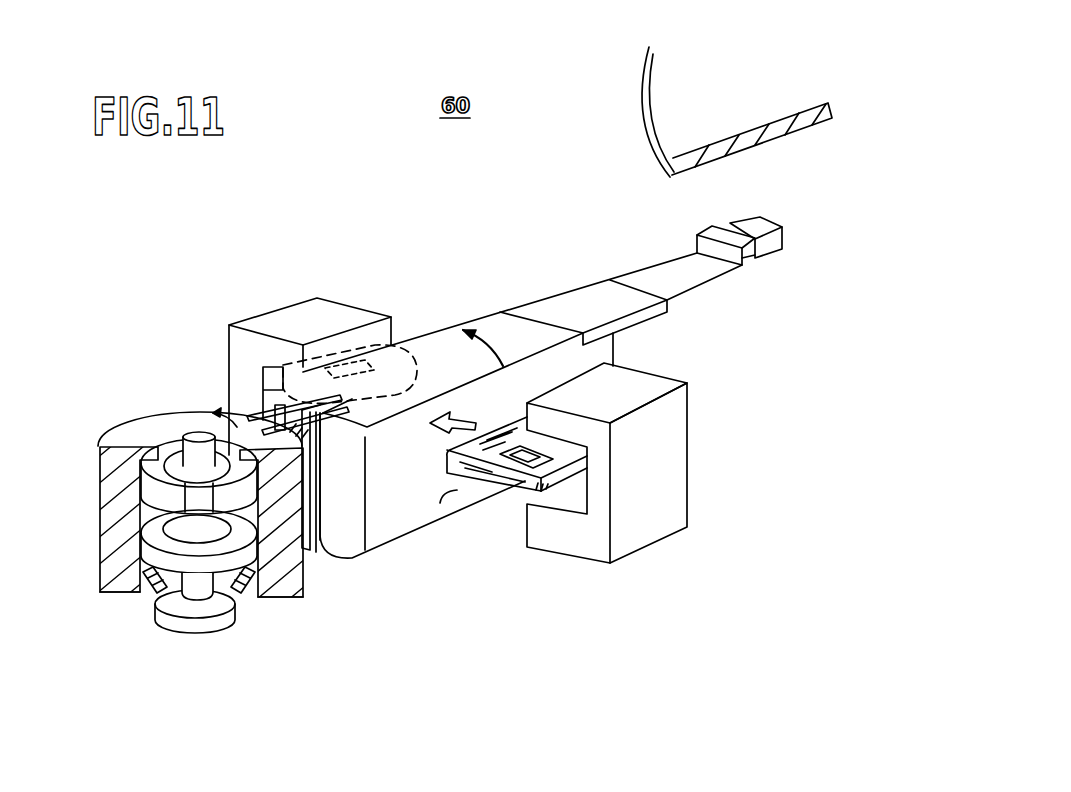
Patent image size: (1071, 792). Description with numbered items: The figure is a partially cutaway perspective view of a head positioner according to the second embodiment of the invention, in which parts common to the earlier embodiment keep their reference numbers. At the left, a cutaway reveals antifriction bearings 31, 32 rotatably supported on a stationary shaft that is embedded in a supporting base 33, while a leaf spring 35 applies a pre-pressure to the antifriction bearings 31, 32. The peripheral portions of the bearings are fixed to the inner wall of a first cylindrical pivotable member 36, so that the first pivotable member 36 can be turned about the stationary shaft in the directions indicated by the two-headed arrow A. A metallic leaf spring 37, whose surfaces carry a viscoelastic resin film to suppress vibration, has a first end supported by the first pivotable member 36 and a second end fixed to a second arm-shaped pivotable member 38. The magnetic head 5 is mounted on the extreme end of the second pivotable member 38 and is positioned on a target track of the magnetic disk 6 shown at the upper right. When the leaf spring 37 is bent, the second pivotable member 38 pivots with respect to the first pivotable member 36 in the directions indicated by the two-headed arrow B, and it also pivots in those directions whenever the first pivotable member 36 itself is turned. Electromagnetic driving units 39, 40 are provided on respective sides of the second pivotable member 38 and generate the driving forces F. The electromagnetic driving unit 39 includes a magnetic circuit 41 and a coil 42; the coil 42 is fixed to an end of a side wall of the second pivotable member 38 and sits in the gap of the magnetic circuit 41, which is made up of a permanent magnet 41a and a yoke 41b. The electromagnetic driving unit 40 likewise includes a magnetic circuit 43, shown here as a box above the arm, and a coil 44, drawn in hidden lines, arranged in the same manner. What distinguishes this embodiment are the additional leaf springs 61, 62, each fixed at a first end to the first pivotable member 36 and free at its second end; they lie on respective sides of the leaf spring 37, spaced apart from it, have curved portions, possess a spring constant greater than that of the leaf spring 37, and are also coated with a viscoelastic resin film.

The magnetic head 5 is at (773, 249).
The magnetic disk 6 is at (748, 108).
The antifriction bearing 31 is at (148, 495).
The antifriction bearing 32 is at (158, 562).
The supporting base 33 is at (200, 437).
The leaf spring 35 is at (240, 585).
The first cylindrical pivotable member 36 is at (123, 592).
The metallic leaf spring 37 is at (322, 417).
The second arm-shaped pivotable member 38 is at (498, 334).
The electromagnetic driving unit 39 is at (548, 603).
The electromagnetic driving unit 40 is at (374, 246).
The magnetic circuit 41 is at (649, 469).
The permanent magnet 41a is at (567, 447).
The yoke 41b is at (677, 440).
The coil 42 is at (510, 483).
The magnetic circuit 43 is at (280, 323).
The coil 44 is at (388, 355).
The leaf spring 61 is at (318, 555).
The leaf spring 62 is at (263, 392).
The two-headed arrow A is at (208, 418).
The two-headed arrow B is at (482, 349).
The driving forces F is at (441, 434).